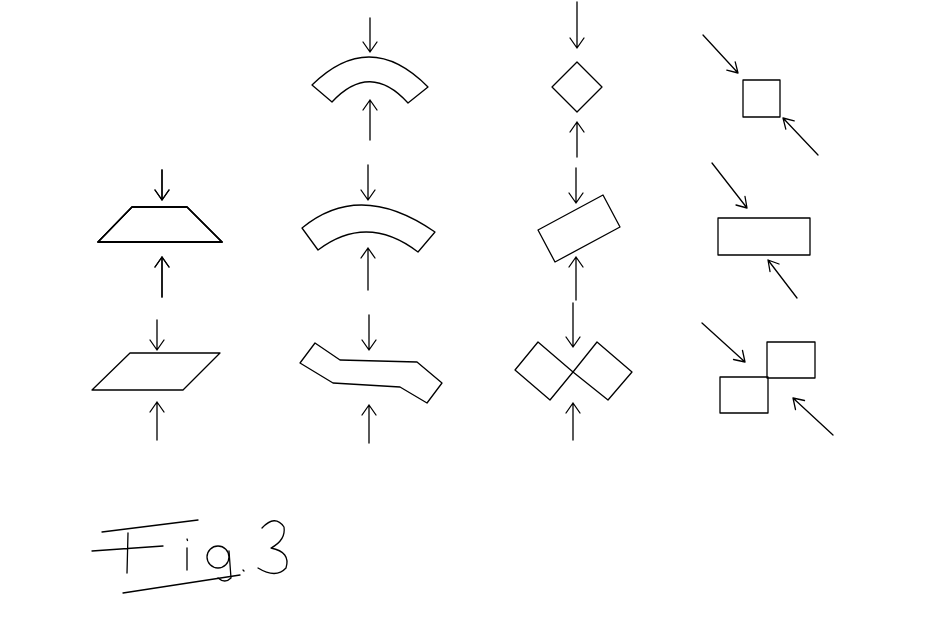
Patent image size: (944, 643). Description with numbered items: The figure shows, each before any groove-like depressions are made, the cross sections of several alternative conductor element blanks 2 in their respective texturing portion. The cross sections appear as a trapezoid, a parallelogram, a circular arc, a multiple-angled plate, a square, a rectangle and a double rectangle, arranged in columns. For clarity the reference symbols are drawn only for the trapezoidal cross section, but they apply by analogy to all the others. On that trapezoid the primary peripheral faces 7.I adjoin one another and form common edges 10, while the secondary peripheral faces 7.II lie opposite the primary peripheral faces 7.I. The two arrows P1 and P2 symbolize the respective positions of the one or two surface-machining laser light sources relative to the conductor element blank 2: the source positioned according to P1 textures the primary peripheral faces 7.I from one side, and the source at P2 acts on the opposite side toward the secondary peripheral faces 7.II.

The common edges 10 is at (160, 173).
The arrow marking first laser light source position P1 is at (130, 203).
The conductor element blank 2 is at (247, 202).
The primary peripheral faces 7.I is at (207, 217).
The secondary peripheral faces 7.II is at (130, 243).
The arrow marking second laser light source position P2 is at (160, 283).